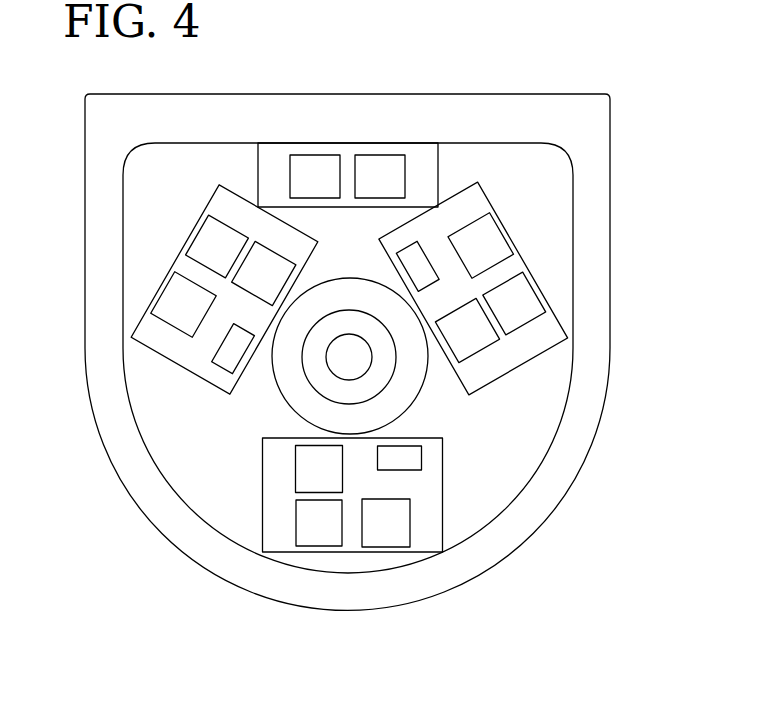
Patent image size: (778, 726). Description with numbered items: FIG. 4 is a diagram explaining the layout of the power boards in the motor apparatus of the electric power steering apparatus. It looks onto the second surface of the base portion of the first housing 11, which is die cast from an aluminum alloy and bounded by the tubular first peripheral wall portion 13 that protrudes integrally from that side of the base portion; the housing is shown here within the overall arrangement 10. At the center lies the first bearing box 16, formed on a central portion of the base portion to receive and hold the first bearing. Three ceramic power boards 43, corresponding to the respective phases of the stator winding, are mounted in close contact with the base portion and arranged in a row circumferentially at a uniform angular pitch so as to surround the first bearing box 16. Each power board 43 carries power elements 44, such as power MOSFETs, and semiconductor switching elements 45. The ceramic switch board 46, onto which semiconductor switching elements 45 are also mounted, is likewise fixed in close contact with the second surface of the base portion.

The housing 10 is at (143, 203).
The first housing 11 is at (79, 167).
The first peripheral wall portion 13 is at (92, 241).
The first bearing box 16 is at (292, 388).
The power board 43 is at (146, 317).
The power element 44 is at (498, 247).
The semiconductor switching element 45 is at (383, 163).
The switch board 46 is at (420, 150).